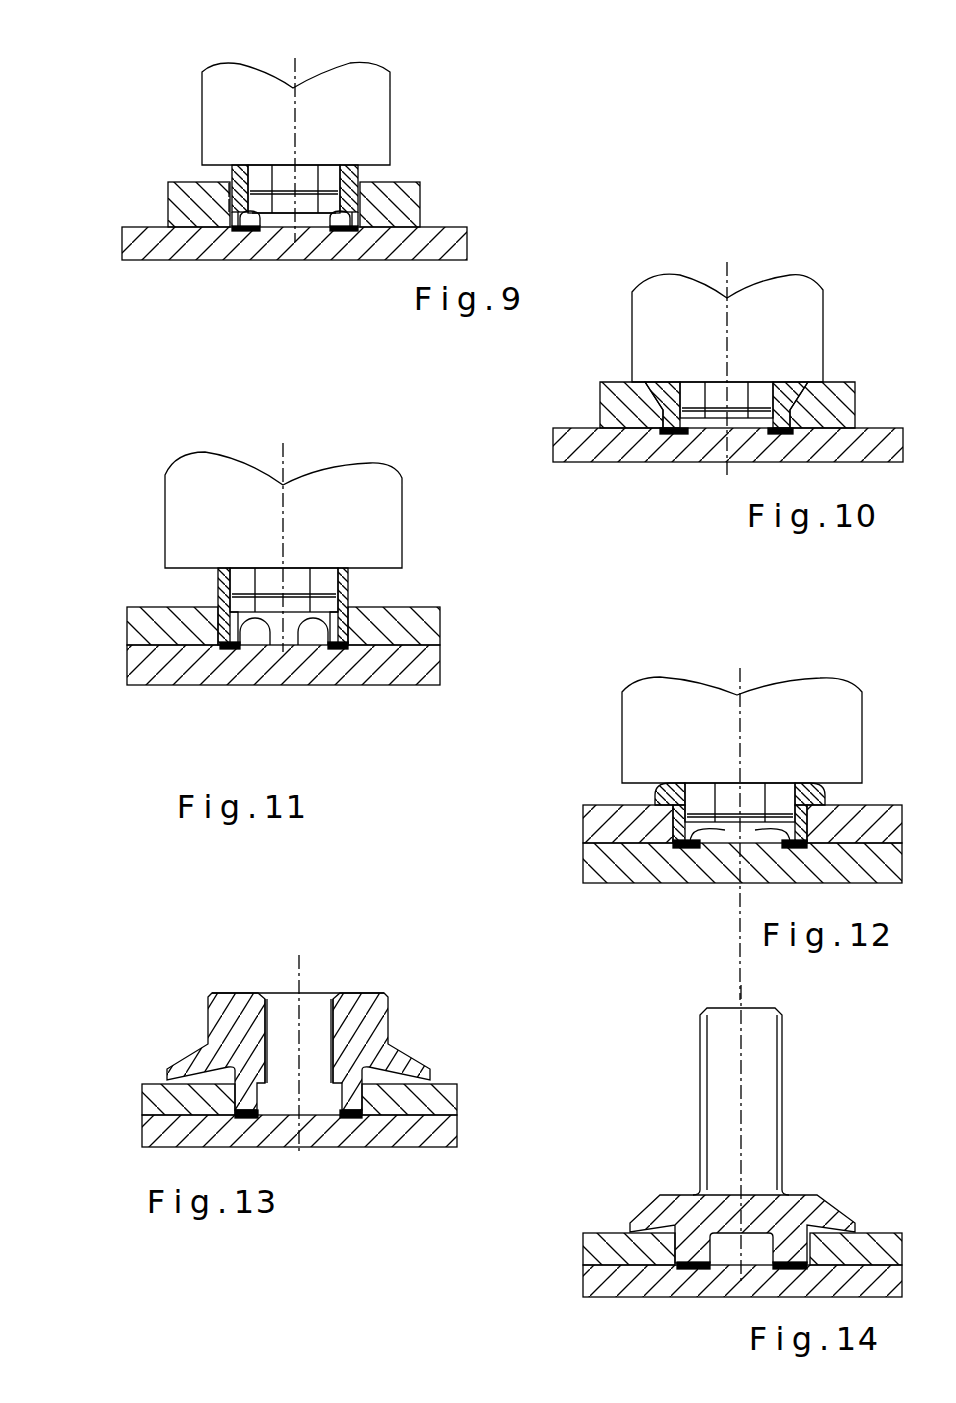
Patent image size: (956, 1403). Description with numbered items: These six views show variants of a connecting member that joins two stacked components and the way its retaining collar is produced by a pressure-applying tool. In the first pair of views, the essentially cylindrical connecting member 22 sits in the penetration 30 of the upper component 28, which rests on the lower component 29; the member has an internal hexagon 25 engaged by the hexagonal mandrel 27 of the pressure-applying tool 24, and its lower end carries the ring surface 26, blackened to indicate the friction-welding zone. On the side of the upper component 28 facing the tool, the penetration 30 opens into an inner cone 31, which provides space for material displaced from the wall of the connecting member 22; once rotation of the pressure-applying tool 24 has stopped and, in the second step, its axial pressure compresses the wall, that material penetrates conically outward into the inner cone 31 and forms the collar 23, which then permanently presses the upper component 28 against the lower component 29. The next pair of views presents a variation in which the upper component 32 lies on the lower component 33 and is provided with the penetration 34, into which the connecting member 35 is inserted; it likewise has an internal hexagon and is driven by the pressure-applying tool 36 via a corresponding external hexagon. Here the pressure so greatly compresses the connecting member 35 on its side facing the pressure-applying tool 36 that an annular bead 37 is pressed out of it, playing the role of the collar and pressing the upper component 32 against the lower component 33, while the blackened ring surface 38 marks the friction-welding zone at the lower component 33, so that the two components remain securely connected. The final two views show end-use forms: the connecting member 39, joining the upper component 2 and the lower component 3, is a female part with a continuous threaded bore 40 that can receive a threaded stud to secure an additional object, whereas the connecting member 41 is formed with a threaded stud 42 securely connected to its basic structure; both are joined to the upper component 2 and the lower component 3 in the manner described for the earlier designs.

In FIG. 13, the upper component 2 is at (428, 1103).
In FIG. 14, the upper component 2 is at (607, 1248).
In FIG. 13, the lower component 3 is at (337, 1128).
In FIG. 14, the lower component 3 is at (662, 1282).
In FIG. 9, the connecting member 22 is at (237, 175).
In FIG. 10, the connecting member 22 is at (667, 412).
In FIG. 10, the collar 23 is at (663, 388).
In FIG. 9, the pressure-applying tool 24 is at (233, 102).
In FIG. 10, the pressure-applying tool 24 is at (663, 325).
In FIG. 9, the internal hexagon 25 is at (328, 202).
In FIG. 9, the ring surface 26 is at (236, 228).
In FIG. 9, the hexagonal mandrel 27 is at (302, 172).
In FIG. 9, the upper component 28 is at (408, 200).
In FIG. 10, the upper component 28 is at (617, 405).
In FIG. 9, the lower component 29 is at (437, 242).
In FIG. 10, the lower component 29 is at (593, 443).
In FIG. 9, the penetration 30 is at (225, 203).
In FIG. 9, the inner cone 31 is at (227, 187).
In FIG. 11, the upper component 32 is at (415, 630).
In FIG. 12, the upper component 32 is at (610, 827).
In FIG. 11, the lower component 33 is at (383, 670).
In FIG. 12, the lower component 33 is at (590, 857).
In FIG. 11, the penetration 34 is at (217, 622).
In FIG. 11, the connecting member 35 is at (343, 603).
In FIG. 12, the connecting member 35 is at (683, 820).
In FIG. 11, the pressure-applying tool 36 is at (377, 512).
In FIG. 12, the pressure-applying tool 36 is at (677, 723).
In FIG. 12, the annular bead 37 is at (820, 790).
In FIG. 11, the ring surface 38 is at (263, 633).
In FIG. 12, the ring surface 38 is at (716, 831).
In FIG. 13, the connecting member 39 is at (228, 1020).
In FIG. 13, the threaded bore 40 is at (266, 1033).
In FIG. 14, the connecting member 41 is at (680, 1210).
In FIG. 14, the threaded stud 42 is at (723, 1068).